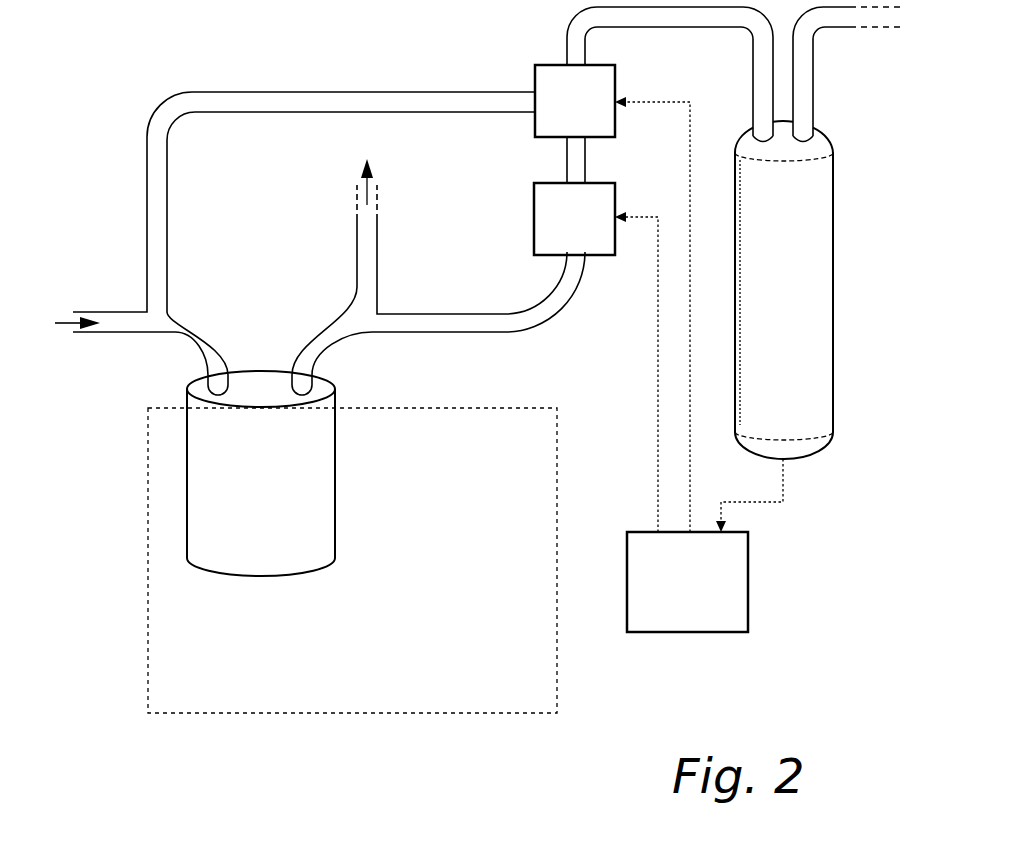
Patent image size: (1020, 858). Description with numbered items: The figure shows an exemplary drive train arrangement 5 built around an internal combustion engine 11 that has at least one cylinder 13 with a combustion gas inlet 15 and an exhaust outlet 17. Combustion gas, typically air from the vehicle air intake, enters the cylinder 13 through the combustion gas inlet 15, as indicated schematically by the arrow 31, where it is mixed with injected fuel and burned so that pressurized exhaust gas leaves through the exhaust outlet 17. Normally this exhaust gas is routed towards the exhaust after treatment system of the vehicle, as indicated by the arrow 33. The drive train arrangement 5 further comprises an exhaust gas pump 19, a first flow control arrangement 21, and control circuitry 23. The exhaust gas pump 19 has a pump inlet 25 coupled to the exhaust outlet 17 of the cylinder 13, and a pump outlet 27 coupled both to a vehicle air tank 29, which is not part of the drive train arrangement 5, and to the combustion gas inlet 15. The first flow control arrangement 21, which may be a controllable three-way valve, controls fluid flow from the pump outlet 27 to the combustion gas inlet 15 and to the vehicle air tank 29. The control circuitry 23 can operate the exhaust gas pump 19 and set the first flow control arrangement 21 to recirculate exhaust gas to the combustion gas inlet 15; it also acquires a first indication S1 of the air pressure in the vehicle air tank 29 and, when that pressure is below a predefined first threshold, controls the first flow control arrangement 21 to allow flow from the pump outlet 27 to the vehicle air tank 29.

The drive train arrangement 5 is at (98, 183).
The internal combustion engine 11 is at (255, 695).
The cylinder 13 is at (217, 498).
The combustion gas inlet 15 is at (218, 380).
The exhaust outlet 17 is at (298, 380).
The exhaust gas pump 19 is at (561, 233).
The first flow control arrangement 21 is at (561, 115).
The control circuitry 23 is at (674, 595).
The pump inlet 25 is at (577, 257).
The pump outlet 27 is at (577, 183).
The vehicle air tank 29 is at (776, 292).
The arrow 31 is at (60, 322).
The arrow 33 is at (370, 193).
The first indication S1 is at (749, 495).